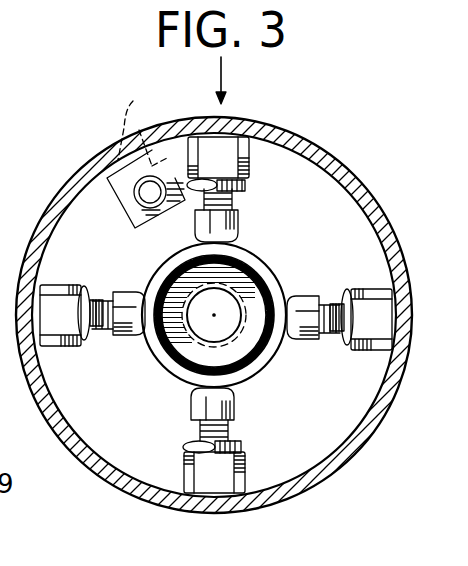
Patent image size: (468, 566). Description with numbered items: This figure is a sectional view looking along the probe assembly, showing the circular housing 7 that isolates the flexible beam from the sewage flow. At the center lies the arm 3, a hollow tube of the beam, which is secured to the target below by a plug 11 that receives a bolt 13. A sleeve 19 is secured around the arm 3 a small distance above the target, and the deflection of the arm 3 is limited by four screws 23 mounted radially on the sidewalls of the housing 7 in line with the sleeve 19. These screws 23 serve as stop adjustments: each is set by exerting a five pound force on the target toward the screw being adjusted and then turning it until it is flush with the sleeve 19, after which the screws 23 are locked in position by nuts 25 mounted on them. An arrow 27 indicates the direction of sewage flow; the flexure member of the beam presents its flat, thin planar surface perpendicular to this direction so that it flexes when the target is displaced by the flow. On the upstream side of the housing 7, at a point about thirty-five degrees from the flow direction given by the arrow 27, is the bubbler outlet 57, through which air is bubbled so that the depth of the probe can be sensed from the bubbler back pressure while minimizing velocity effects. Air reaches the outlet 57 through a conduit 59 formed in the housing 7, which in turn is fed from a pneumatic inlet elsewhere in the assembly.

The arm 3 is at (252, 272).
The housing 7 is at (371, 220).
The plug 11 is at (251, 334).
The bolt 13 is at (202, 322).
The sleeve 19 is at (259, 370).
The screws 23 is at (237, 223).
The nuts 25 is at (247, 187).
The arrow 27 is at (222, 74).
The outlet 57 is at (142, 129).
The conduit 59 is at (135, 203).